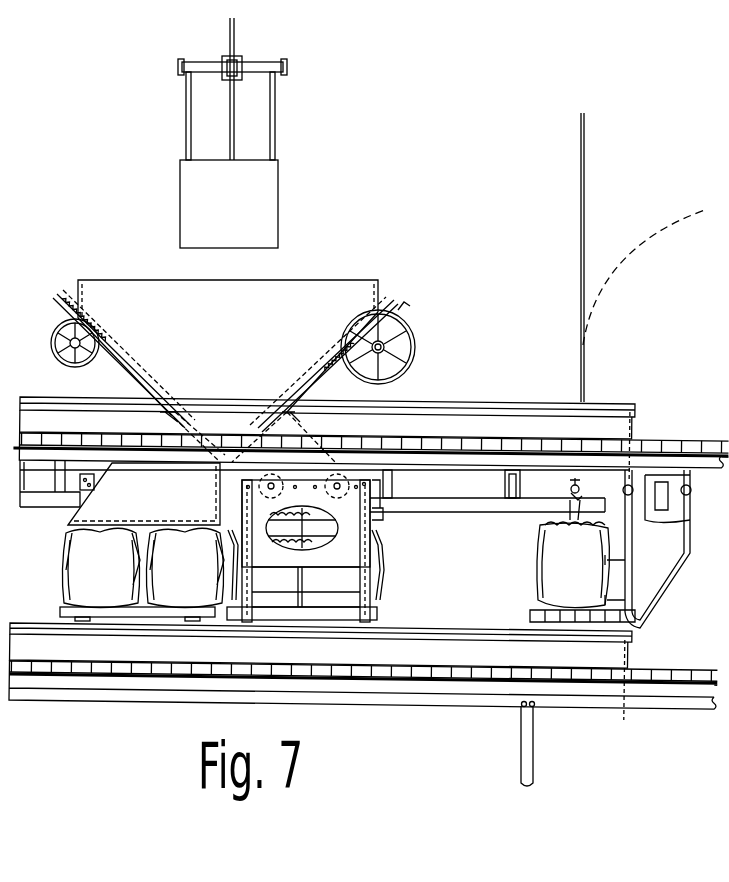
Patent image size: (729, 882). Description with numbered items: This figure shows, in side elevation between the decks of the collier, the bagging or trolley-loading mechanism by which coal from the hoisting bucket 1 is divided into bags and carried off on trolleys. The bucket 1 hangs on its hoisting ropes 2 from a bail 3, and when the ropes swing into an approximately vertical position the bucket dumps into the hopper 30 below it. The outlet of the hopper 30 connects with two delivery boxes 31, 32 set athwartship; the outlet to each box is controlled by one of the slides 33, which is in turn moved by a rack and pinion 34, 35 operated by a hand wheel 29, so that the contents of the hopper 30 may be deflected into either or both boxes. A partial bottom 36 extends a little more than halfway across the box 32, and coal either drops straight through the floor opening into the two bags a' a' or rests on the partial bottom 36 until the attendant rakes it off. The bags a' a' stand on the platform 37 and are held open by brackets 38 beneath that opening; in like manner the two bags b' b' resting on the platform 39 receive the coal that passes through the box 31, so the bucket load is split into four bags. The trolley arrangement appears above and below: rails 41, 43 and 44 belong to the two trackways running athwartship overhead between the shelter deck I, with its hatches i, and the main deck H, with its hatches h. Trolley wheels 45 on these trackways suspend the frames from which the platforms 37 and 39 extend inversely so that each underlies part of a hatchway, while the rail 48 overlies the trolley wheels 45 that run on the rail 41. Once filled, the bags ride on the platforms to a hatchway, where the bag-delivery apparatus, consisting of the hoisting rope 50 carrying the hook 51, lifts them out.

The bucket 1 is at (229, 204).
The hoisting rope 2 is at (230, 30).
The bucket bail 3 is at (235, 140).
The hand wheel 29 is at (3, 412).
The hopper 30 is at (228, 371).
The delivery box 31 is at (144, 494).
The delivery box 32 is at (292, 428).
The slide 33 is at (273, 412).
The rack 34 is at (404, 306).
The pinion 35 is at (386, 347).
The partial bottom 36 is at (383, 522).
The platform 37 is at (371, 614).
The brackets 38 is at (378, 545).
The platform 39 is at (62, 611).
The rail 41 is at (497, 505).
The rail 43 is at (52, 500).
The rail 44 is at (12, 503).
The trolley wheels 45 is at (372, 443).
The rail 48 is at (490, 473).
The hoisting rope 50 is at (584, 236).
The hook 51 is at (580, 493).
The shelter deck I is at (413, 438).
The hatches i is at (470, 420).
The main deck H is at (398, 660).
The hatches h is at (461, 655).
The bags a' is at (304, 580).
The bags b' is at (143, 567).